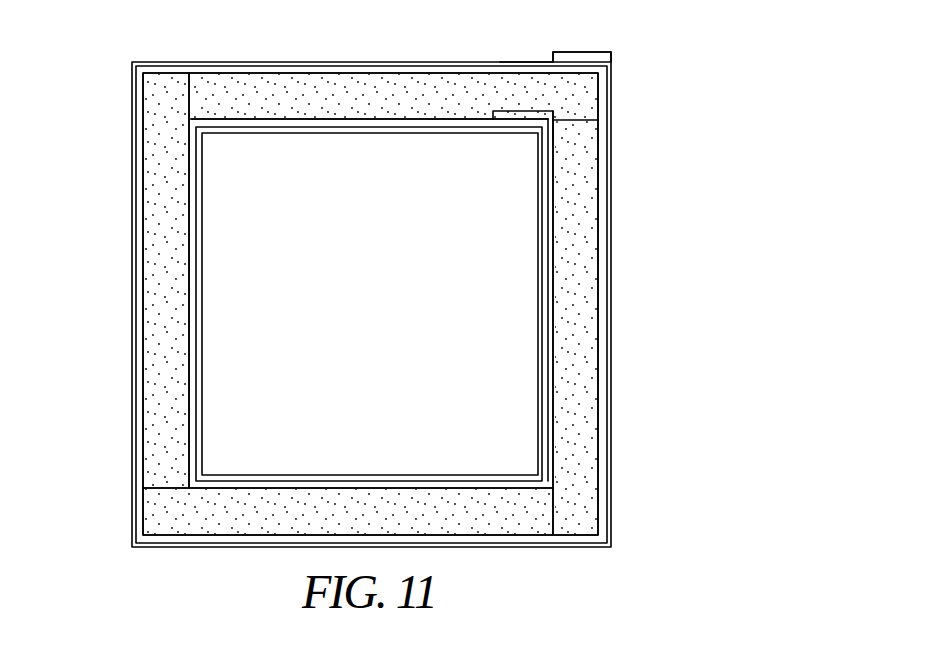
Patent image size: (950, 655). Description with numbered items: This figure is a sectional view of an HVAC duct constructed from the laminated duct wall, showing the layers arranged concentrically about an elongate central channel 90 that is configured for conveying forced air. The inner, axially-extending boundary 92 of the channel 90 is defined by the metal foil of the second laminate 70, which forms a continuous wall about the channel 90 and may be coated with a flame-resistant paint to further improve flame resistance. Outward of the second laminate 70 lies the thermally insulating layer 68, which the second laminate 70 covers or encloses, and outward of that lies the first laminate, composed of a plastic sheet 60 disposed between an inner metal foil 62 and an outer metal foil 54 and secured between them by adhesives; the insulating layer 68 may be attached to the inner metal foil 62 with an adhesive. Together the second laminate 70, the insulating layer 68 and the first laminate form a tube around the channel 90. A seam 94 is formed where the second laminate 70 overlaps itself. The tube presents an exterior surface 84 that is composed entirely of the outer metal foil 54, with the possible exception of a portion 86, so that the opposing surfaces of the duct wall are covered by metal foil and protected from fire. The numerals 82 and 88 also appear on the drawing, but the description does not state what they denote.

The outer metal foil 54 is at (603, 215).
The plastic sheet 60 is at (607, 385).
The inner metal foil 62 is at (592, 159).
The thermally insulating layer 68 is at (273, 103).
The second laminate 70 is at (551, 379).
The corner member 82 is at (185, 97).
The exterior surface 84 is at (352, 62).
The portion 86 is at (552, 60).
The tab 88 is at (578, 60).
The central channel 90 is at (372, 292).
The axially-extending boundary 92 is at (356, 132).
The seam 94 is at (511, 106).